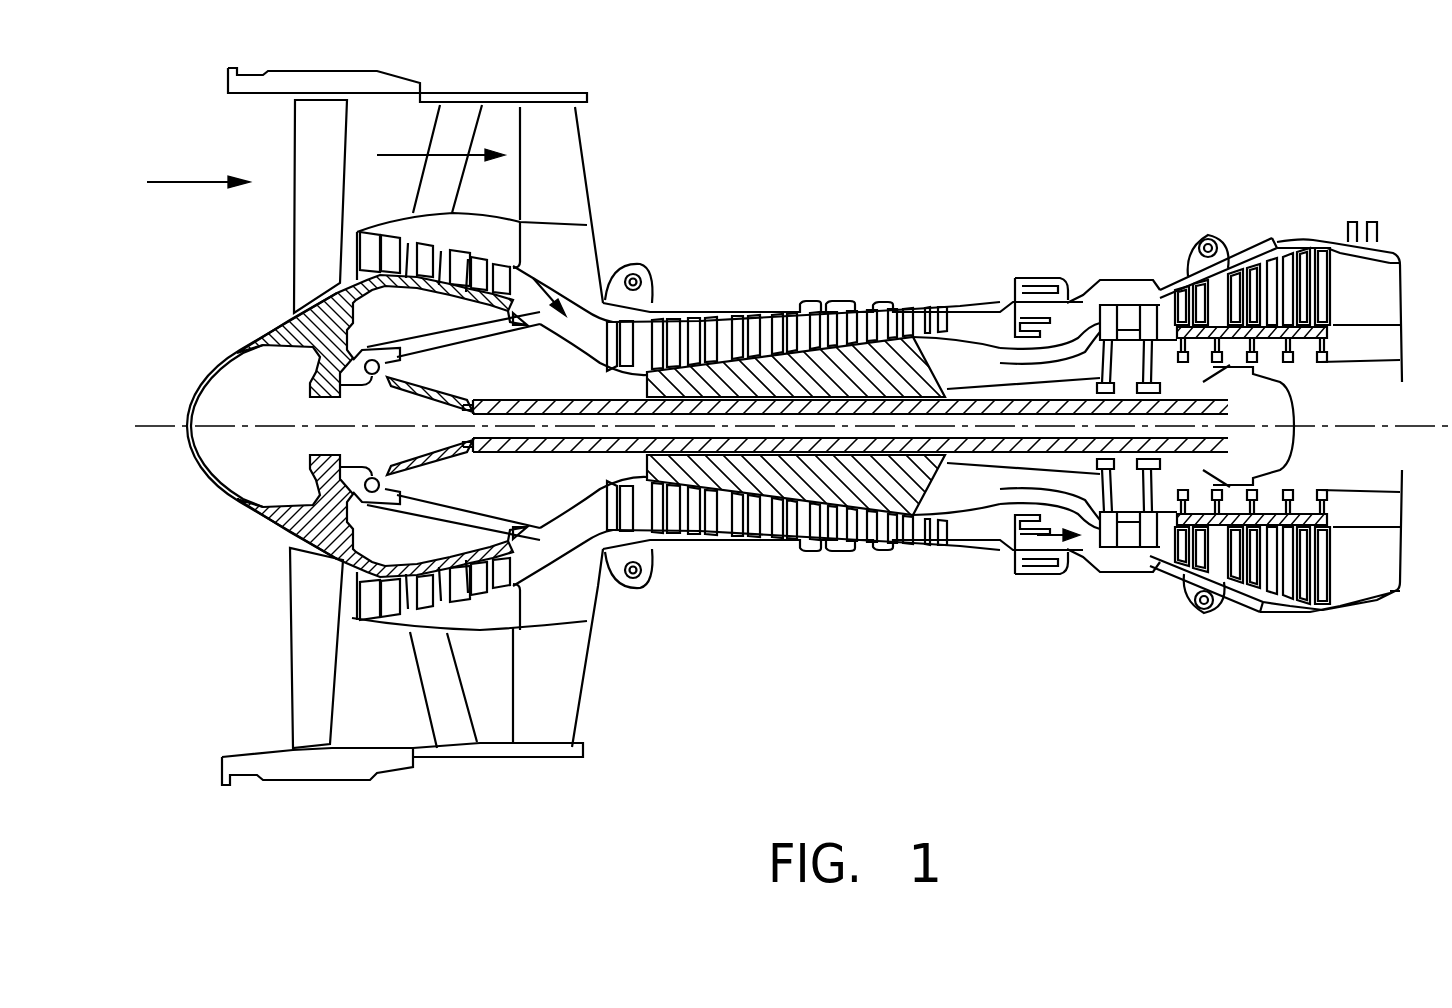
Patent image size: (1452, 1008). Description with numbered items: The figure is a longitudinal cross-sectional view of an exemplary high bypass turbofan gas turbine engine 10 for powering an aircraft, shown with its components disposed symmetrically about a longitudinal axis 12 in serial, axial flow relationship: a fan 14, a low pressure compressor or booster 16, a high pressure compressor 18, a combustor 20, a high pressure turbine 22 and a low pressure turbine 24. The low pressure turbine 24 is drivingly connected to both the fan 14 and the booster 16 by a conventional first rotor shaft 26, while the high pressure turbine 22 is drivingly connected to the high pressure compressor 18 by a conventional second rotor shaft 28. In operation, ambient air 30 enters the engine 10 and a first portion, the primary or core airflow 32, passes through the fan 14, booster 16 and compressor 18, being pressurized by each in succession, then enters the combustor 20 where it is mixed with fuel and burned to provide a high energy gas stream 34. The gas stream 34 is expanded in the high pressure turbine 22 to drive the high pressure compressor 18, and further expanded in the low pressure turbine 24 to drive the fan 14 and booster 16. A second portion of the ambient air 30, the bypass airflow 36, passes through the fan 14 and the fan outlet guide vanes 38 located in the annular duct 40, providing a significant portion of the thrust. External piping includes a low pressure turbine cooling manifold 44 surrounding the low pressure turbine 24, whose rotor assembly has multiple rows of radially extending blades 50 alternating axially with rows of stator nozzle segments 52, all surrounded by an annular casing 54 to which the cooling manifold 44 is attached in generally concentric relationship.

The gas turbine engine 10 is at (1040, 149).
The longitudinal axis 12 is at (153, 424).
The fan 14 is at (300, 248).
The booster 16 is at (455, 258).
The high pressure compressor 18 is at (690, 318).
The combustor 20 is at (1068, 305).
The high pressure turbine 22 is at (1105, 325).
The low pressure turbine 24 is at (1283, 238).
The first rotor shaft 26 is at (1275, 398).
The second rotor shaft 28 is at (1025, 378).
The ambient air 30 is at (180, 182).
The core airflow 32 is at (532, 275).
The high energy gas stream 34 is at (1047, 538).
The bypass airflow 36 is at (412, 153).
The fan outlet guide vanes 38 is at (457, 112).
The annular duct 40 is at (508, 192).
The low pressure turbine cooling manifold 44 is at (1258, 240).
The blades 50 is at (1215, 278).
The nozzle segments 52 is at (1302, 597).
The annular casing 54 is at (1315, 240).